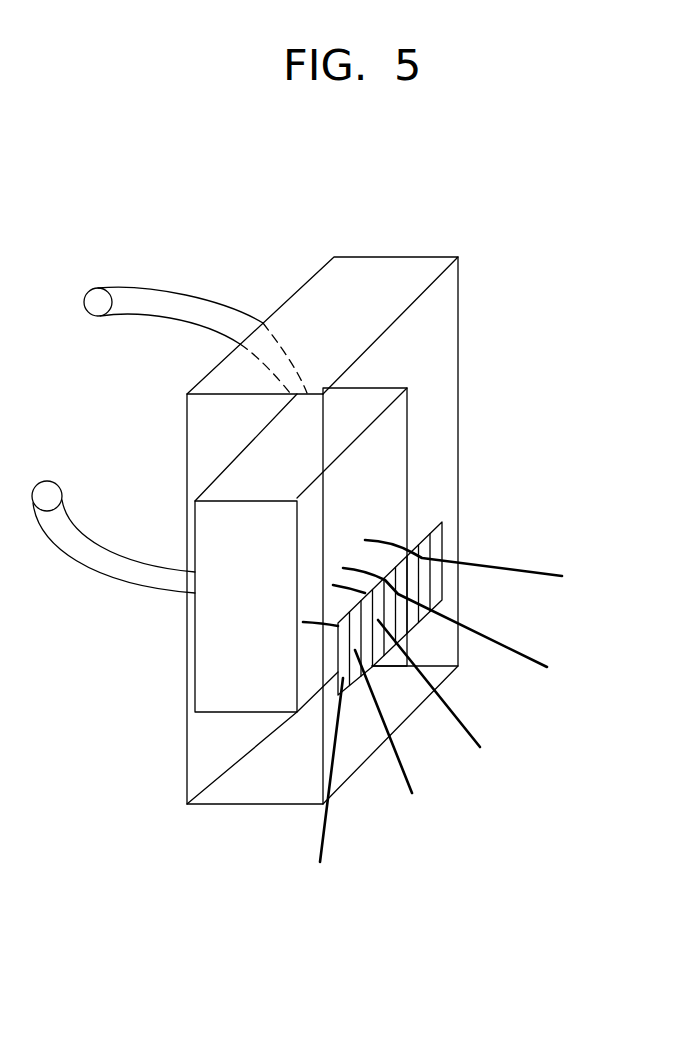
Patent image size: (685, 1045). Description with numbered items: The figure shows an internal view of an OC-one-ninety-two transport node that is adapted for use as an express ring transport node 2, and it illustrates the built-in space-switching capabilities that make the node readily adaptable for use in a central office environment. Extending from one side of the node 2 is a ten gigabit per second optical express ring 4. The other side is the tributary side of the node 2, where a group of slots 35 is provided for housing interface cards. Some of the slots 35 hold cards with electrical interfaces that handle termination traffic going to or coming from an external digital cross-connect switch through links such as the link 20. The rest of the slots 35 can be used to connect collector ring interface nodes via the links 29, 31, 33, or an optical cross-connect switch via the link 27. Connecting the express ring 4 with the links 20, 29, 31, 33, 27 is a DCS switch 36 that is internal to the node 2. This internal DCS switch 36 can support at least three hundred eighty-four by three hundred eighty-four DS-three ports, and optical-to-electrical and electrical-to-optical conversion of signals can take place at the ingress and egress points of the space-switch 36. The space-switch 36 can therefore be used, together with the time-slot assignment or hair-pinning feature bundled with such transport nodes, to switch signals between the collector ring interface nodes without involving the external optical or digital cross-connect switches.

The express ring transport node 2 is at (377, 290).
The optical express ring 4 is at (201, 296).
The DCS switch 36 is at (367, 400).
The slots 35 is at (436, 522).
The link 20 is at (486, 563).
The link 29 is at (482, 632).
The link 31 is at (450, 710).
The link 33 is at (400, 762).
The link 27 is at (328, 808).